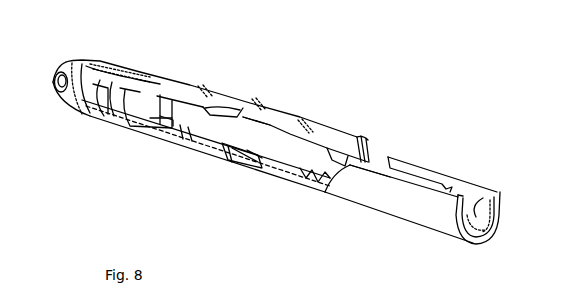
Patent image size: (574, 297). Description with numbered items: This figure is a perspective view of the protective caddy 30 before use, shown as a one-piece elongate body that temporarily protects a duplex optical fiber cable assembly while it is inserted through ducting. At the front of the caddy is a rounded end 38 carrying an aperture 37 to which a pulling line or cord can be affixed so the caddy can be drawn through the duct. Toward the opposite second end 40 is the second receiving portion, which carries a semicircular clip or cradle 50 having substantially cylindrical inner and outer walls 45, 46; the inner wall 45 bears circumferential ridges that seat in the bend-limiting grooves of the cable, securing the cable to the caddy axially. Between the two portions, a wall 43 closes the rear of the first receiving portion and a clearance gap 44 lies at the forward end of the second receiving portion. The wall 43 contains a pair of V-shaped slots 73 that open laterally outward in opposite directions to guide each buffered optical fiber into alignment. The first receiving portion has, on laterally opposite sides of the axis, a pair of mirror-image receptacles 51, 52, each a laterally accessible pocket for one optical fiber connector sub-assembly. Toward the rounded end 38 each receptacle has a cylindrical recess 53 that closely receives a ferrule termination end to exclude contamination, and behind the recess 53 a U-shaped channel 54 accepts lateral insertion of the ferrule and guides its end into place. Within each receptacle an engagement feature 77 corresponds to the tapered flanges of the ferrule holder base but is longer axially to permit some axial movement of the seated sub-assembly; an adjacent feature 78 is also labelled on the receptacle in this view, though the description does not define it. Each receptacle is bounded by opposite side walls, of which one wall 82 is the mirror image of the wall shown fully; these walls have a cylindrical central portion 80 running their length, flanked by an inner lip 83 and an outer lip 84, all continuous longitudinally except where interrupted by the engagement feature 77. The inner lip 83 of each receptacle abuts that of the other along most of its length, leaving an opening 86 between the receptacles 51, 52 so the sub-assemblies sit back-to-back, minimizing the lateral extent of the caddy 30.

The protective caddy 30 is at (190, 80).
The aperture 37 is at (60, 82).
The rounded end 38 is at (68, 63).
The second end 40 is at (500, 229).
The wall 43 is at (375, 143).
The clearance gap 44 is at (384, 150).
The inner wall 45 is at (498, 208).
The outer wall 46 is at (418, 198).
The semicircular clip or cradle 50 is at (445, 195).
The first receptacle 51 is at (172, 150).
The second receptacle 52 is at (268, 138).
The recess 53 is at (104, 112).
The U-shaped channel 54 is at (128, 107).
The slot 73 is at (320, 168).
The engagement feature 77 is at (232, 167).
The ferrule 78 is at (255, 173).
The cylindrical central portion 80 is at (162, 133).
The side wall 82 is at (210, 105).
The inner lip 83 is at (213, 150).
The outer lip 84 is at (187, 134).
The opening 86 is at (298, 157).